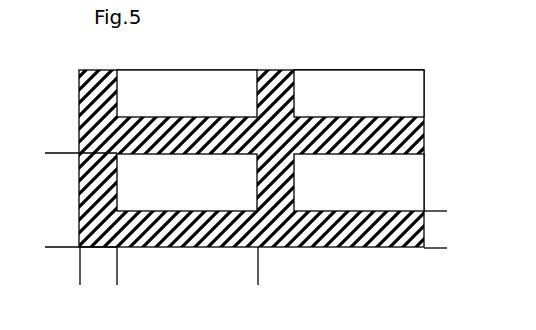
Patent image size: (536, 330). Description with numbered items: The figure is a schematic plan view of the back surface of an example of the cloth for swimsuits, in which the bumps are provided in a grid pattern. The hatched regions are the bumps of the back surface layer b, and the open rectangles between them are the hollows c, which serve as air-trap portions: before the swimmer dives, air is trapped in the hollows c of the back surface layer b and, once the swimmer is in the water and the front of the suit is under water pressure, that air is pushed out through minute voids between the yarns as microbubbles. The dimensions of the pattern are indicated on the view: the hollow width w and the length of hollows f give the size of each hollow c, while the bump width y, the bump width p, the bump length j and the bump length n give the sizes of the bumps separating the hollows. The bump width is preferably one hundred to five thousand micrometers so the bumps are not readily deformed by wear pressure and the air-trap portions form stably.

The back surface layer b is at (324, 63).
The hollows (air-trap portion) c is at (370, 88).
The bump length j is at (69, 162).
The length of hollows f is at (198, 164).
The hollow width w is at (248, 200).
The bump width y is at (108, 271).
The bump width p is at (249, 271).
The bump length n is at (434, 220).